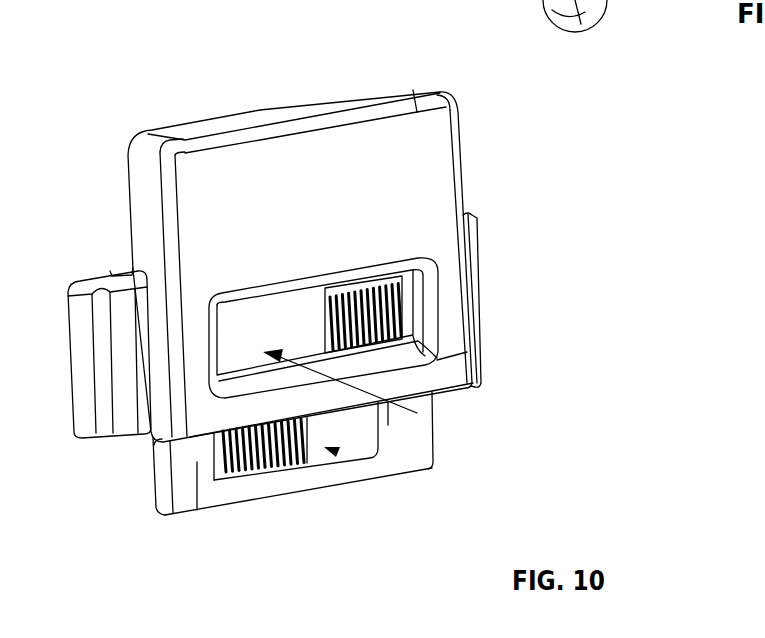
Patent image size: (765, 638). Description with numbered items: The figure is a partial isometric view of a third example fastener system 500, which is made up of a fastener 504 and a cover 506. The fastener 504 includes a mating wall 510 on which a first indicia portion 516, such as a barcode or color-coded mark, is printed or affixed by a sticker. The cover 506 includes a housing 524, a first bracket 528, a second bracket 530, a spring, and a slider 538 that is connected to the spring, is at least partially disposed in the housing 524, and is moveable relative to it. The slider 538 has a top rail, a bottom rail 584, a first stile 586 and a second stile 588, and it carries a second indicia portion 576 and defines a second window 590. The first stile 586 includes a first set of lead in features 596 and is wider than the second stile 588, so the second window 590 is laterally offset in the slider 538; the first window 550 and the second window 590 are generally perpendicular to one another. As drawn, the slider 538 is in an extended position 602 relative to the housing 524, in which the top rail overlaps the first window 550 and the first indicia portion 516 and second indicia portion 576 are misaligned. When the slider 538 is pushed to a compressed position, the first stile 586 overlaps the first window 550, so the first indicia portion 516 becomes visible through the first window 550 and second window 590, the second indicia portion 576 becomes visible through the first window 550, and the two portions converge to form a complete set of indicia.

The third example fastener system 500 is at (134, 42).
The extended position 602 is at (153, 103).
The housing 524 is at (128, 165).
The cover 506 is at (418, 97).
The fastener 504 is at (413, 292).
The mating wall 510 is at (407, 320).
The second bracket 530 is at (480, 318).
The first indicia portion 516 is at (470, 380).
The first window 550 is at (417, 413).
The first bracket 528 is at (100, 378).
The slider 538 is at (410, 440).
The second stile 588 is at (431, 470).
The first set of lead in features 596 is at (197, 464).
The first stile 586 is at (218, 482).
The bottom rail 584 is at (317, 477).
The second indicia portion 576 is at (287, 465).
The second window 590 is at (335, 452).